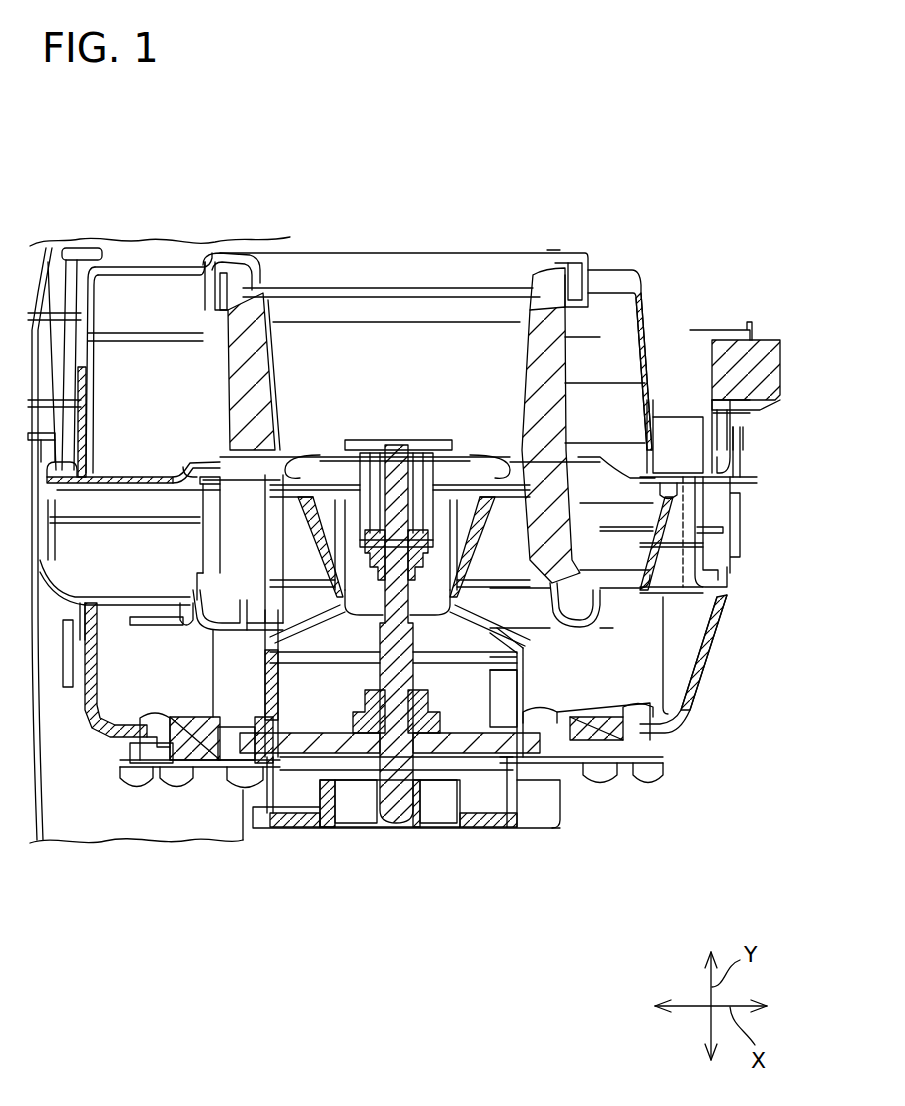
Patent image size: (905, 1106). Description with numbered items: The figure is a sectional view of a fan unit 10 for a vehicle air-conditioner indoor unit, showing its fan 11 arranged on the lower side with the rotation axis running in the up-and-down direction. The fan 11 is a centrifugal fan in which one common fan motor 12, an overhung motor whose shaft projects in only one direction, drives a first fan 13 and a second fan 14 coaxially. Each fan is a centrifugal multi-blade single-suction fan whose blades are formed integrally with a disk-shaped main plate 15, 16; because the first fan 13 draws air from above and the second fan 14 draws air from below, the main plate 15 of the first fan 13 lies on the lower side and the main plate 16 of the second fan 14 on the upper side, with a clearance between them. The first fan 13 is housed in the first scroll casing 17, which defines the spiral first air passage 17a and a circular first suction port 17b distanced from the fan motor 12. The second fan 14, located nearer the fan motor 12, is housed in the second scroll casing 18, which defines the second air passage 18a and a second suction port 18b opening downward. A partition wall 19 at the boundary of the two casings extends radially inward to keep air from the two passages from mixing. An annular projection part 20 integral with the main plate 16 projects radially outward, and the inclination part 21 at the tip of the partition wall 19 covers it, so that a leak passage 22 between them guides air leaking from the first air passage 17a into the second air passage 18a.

The fan unit 10 is at (613, 217).
The fan 11 is at (587, 660).
The fan motor 12 is at (360, 833).
The first fan 13 is at (640, 300).
The second fan 14 is at (578, 518).
The main plate 15 is at (183, 467).
The main plate 16 is at (290, 455).
The first scroll casing 17 is at (632, 340).
The first air passage 17a is at (147, 295).
The first suction port 17b is at (522, 313).
The second scroll casing 18 is at (655, 512).
The second air passage 18a is at (119, 560).
The second suction port 18b is at (538, 617).
The partition wall 19 is at (117, 473).
The projection part 20 is at (200, 492).
The inclination part 21 is at (185, 467).
The leak passage 22 is at (165, 490).